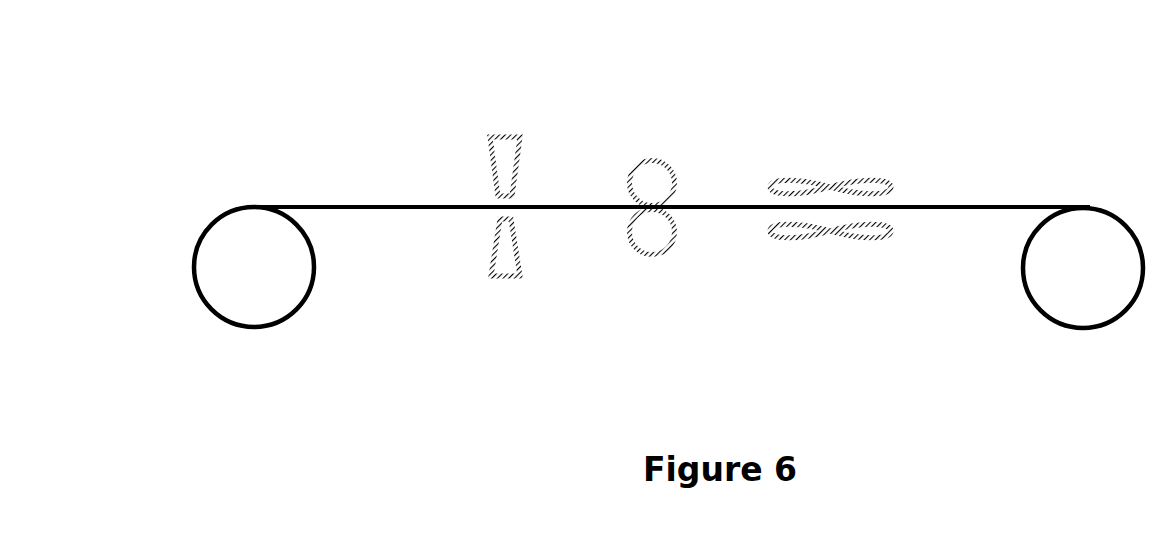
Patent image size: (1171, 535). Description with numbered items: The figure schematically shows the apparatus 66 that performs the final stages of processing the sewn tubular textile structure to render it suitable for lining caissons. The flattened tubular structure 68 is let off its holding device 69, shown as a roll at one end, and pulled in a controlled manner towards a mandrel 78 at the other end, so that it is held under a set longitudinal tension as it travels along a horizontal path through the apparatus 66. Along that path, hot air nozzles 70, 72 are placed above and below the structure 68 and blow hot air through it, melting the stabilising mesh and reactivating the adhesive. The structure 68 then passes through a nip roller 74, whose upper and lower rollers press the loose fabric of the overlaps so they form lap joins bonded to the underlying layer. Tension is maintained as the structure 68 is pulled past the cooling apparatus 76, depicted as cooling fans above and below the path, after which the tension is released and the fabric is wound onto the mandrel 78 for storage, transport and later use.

The apparatus 66 is at (1040, 148).
The flattened tubular structure 68 is at (357, 207).
The holding device 69 is at (260, 295).
The hot air nozzle 70 is at (498, 135).
The hot air nozzle 72 is at (503, 280).
The nip roller 74 is at (658, 158).
The cooling apparatus 76 is at (848, 178).
The mandrel 78 is at (1086, 282).